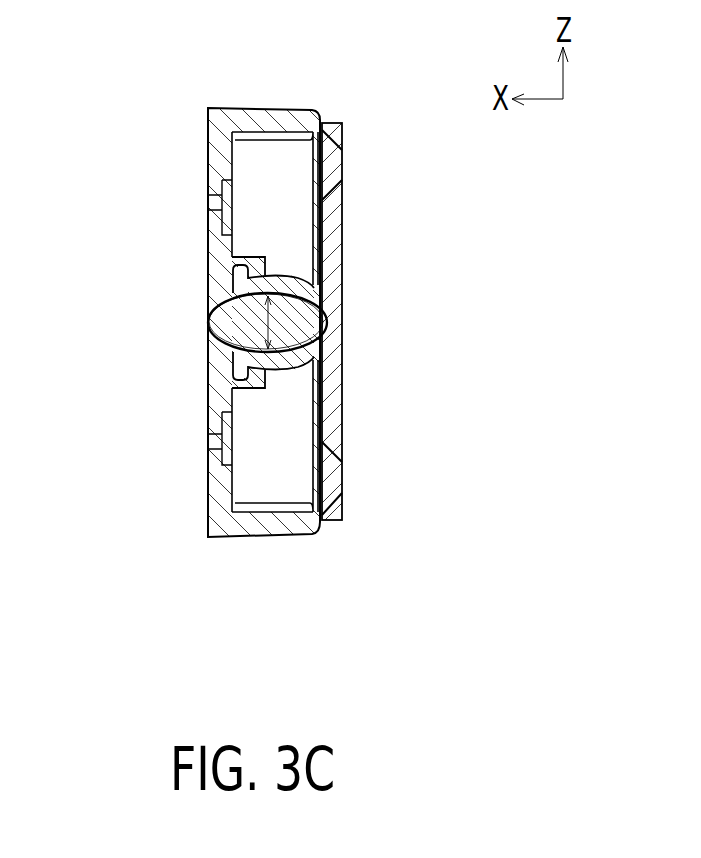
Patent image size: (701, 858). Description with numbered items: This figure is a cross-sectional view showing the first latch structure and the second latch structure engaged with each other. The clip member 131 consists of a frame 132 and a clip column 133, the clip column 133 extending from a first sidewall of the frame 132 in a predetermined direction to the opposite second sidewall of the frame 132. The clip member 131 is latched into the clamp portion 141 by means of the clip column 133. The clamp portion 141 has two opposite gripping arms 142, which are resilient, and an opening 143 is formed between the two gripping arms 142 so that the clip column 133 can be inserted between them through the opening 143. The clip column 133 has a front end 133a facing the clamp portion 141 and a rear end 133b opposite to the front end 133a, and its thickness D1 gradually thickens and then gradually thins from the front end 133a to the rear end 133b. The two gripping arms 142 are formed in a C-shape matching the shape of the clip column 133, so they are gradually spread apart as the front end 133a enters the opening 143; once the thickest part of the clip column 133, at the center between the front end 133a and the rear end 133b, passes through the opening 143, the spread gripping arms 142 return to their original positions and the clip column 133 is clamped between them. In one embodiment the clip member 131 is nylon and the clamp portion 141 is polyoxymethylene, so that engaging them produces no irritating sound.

The clip member 131 is at (110, 145).
The frame 132 is at (208, 170).
The clip column 133 is at (207, 258).
The front end 133a is at (327, 323).
The rear end 133b is at (211, 319).
The clamp portion 141 is at (413, 321).
The gripping arms 142 is at (290, 362).
The opening 143 is at (232, 313).
The thickness D1 is at (266, 327).